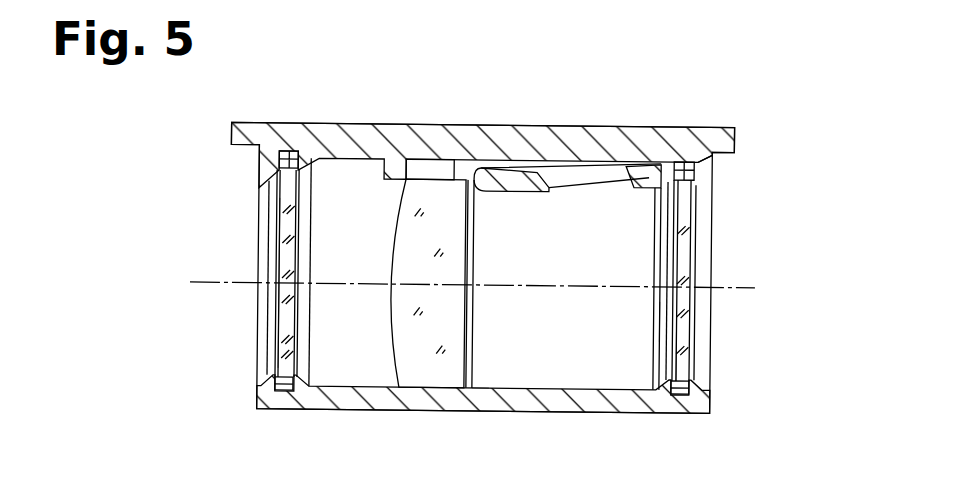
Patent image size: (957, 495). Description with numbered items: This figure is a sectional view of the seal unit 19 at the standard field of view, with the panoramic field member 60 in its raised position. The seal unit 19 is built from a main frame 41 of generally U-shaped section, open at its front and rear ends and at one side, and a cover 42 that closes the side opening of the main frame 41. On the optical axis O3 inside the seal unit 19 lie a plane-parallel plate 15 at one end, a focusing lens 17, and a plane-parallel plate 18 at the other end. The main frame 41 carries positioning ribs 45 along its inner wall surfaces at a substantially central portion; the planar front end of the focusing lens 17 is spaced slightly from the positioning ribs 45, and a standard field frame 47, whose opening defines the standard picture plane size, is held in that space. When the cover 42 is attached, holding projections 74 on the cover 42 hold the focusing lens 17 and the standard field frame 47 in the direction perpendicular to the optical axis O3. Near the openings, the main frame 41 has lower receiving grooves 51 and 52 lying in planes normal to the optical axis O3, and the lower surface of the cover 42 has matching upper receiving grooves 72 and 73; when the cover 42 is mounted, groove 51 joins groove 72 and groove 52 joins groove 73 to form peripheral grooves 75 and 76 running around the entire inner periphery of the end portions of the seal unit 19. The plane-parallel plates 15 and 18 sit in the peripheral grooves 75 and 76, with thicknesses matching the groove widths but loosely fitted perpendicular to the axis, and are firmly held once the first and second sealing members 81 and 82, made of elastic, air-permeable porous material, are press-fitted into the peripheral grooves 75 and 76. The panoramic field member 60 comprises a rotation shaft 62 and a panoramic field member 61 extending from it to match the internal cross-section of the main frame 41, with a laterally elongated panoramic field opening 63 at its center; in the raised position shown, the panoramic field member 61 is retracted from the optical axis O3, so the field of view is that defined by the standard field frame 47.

The plane-parallel plate 15 is at (683, 243).
The focusing lens 17 is at (429, 375).
The plane-parallel plate 18 is at (287, 248).
The seal unit 19 is at (742, 151).
The main frame 41 is at (586, 398).
The cover 42 is at (593, 131).
The positioning ribs 45 is at (478, 386).
The standard field frame 47 is at (474, 310).
The lower receiving groove 51 is at (677, 361).
The lower receiving groove 52 is at (284, 375).
The panoramic field member 60 is at (537, 194).
The panoramic field member 61 is at (523, 162).
The rotation shaft 62 is at (495, 167).
The panoramic field opening 63 is at (612, 185).
The upper receiving groove 72 is at (675, 210).
The upper receiving groove 73 is at (287, 198).
The holding projections 74 is at (458, 160).
The peripheral groove 75 is at (600, 290).
The peripheral groove 76 is at (361, 195).
The first sealing member 81 is at (682, 158).
The second sealing member 82 is at (287, 152).
The optical axis O3 is at (493, 291).